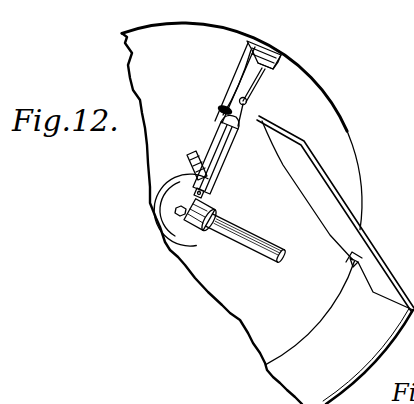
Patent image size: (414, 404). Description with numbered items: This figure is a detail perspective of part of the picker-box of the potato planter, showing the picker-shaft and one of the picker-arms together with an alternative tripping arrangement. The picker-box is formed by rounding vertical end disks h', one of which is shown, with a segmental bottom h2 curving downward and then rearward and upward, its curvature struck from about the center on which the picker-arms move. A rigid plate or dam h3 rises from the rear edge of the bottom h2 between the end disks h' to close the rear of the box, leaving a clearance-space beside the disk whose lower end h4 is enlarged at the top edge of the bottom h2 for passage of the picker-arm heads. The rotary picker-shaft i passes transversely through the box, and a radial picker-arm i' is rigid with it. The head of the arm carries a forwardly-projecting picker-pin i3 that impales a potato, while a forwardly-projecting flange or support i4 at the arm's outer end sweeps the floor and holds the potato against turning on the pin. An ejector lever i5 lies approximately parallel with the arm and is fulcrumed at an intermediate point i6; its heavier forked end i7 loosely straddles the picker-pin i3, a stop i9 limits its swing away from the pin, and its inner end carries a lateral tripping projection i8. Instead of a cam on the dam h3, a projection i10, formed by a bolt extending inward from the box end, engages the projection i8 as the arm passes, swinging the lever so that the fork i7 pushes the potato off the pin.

The end disk h' is at (242, 213).
The bottom h2 is at (339, 332).
The plate or dam h3 is at (343, 220).
The enlarged lower end of clearance-space h4 is at (352, 265).
The picker-shaft i is at (246, 255).
The picker-arm i' is at (229, 162).
The picker-pin i3 is at (280, 68).
The flange or support i4 is at (266, 43).
The lever i5 is at (238, 90).
The fulcrum point i6 is at (228, 150).
The fork or bifurcated end i7 is at (258, 80).
The tripping projection i8 is at (190, 160).
The stop i9 is at (247, 102).
The projection i10 is at (220, 209).